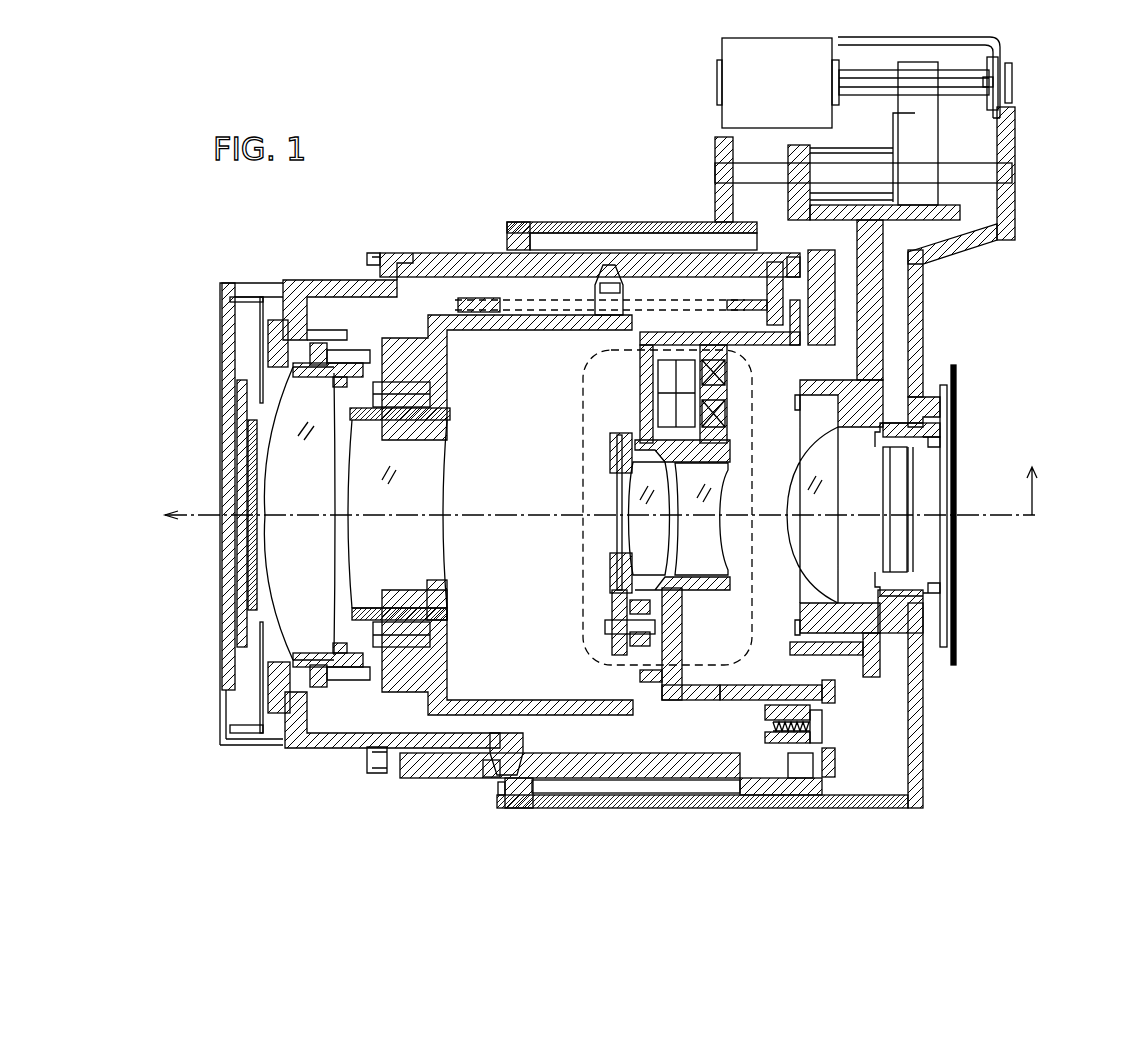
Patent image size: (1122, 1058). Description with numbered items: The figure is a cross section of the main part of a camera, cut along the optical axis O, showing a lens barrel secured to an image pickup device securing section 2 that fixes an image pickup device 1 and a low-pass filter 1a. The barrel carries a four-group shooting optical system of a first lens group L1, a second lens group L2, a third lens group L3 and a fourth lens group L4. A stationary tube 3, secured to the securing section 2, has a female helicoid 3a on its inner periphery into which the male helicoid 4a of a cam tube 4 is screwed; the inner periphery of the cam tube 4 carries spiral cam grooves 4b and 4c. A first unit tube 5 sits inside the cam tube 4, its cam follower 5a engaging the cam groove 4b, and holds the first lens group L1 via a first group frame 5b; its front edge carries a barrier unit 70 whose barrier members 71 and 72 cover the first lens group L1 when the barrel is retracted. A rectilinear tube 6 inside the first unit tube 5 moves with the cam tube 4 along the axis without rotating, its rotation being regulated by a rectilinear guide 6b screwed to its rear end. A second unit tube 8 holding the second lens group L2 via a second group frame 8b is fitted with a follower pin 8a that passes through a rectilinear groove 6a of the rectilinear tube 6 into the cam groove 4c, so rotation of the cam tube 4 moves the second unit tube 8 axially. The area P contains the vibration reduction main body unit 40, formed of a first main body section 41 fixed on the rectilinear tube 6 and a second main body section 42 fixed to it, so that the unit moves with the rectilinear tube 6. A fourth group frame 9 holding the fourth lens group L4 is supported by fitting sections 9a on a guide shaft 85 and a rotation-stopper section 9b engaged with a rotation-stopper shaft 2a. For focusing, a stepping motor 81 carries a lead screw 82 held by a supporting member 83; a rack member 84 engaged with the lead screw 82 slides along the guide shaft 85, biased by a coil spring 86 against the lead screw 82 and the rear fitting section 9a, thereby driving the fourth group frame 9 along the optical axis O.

The image pickup device 1 is at (930, 549).
The low-pass filter 1a is at (890, 478).
The image pickup device securing section 2 is at (920, 290).
The rotation-stopper shaft 2a is at (872, 670).
The stationary tube 3 is at (618, 800).
The female helicoid 3a is at (558, 790).
The cam tube 4 is at (423, 768).
The male helicoid 4a is at (785, 789).
The cam groove 4b is at (473, 774).
The cam groove 4c is at (620, 305).
The first unit tube 5 is at (307, 748).
The cam follower 5a is at (497, 778).
The first group frame 5b is at (310, 667).
The rectilinear tube 6 is at (663, 718).
The rectilinear groove 6a is at (548, 300).
The rectilinear guide 6b is at (835, 762).
The second unit tube 8 is at (392, 678).
The follower pin 8a is at (610, 283).
The second group frame 8b is at (443, 600).
The fourth group frame 9 is at (875, 318).
The fitting section 9a is at (790, 188).
The rotation-stopper section 9b is at (925, 705).
The vibration reduction main body unit 40 is at (742, 779).
The first main body section 41 is at (738, 700).
The second main body section 42 is at (695, 700).
The barrier unit 70 is at (228, 645).
The barrier member 71 is at (250, 483).
The barrier member 72 is at (240, 572).
The stepping motor 81 is at (735, 52).
The lead screw 82 is at (963, 75).
The supporting member 83 is at (968, 43).
The rack member 84 is at (935, 127).
The guide shaft 85 is at (975, 182).
The coil spring 86 is at (863, 148).
The first lens group L1 is at (290, 460).
The second lens group L2 is at (440, 460).
The third lens group L3 is at (628, 500).
The fourth lens group L4 is at (828, 455).
The optical axis O is at (490, 513).
The area P is at (582, 543).